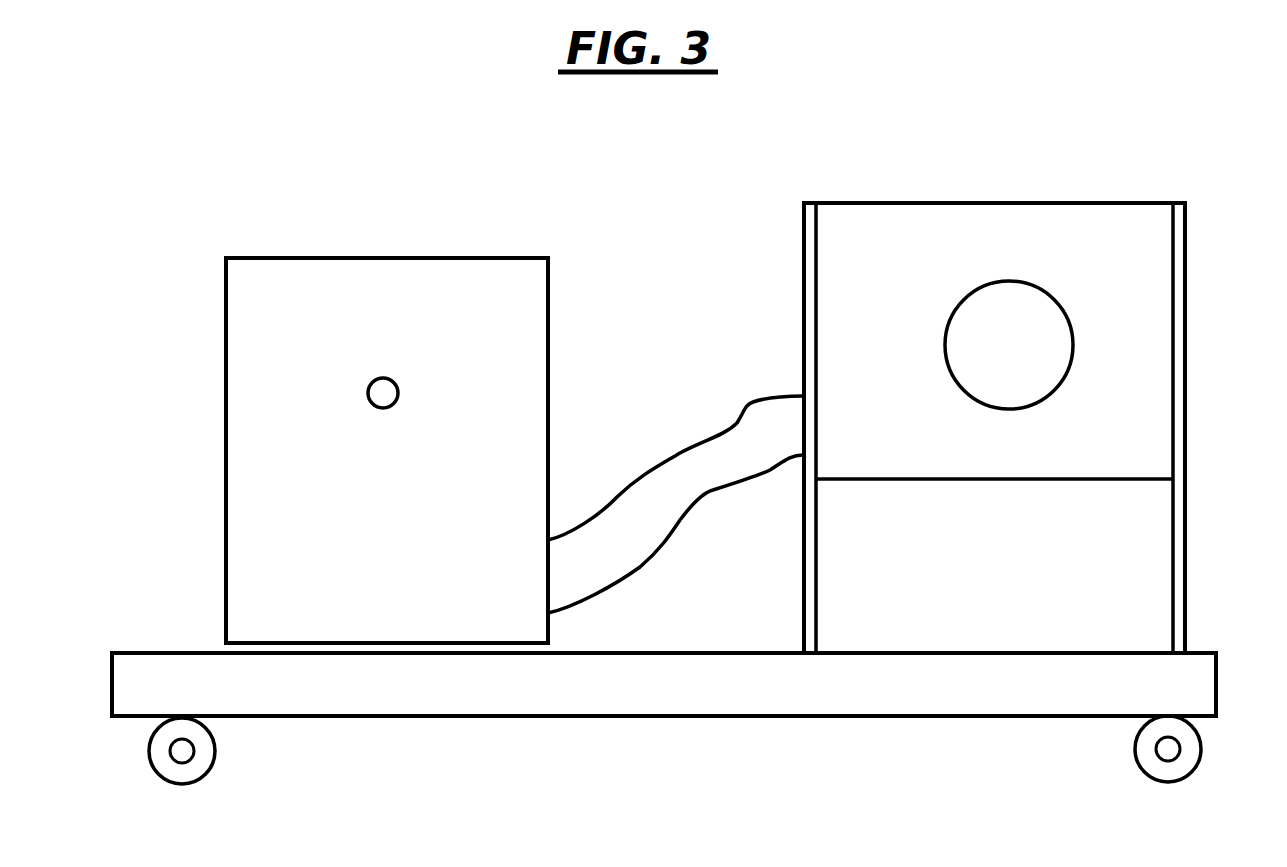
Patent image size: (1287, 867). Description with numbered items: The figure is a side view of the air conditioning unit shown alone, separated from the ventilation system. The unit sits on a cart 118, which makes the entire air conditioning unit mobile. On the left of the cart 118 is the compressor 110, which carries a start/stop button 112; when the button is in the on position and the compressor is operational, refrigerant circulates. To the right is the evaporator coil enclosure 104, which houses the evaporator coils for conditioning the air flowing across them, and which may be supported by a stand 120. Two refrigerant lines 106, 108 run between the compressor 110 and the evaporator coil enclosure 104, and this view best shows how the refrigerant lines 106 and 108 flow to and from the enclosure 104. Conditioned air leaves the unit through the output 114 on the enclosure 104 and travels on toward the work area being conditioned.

The evaporator coil enclosure 104 is at (868, 203).
The refrigerant line 106 is at (677, 458).
The refrigerant line 108 is at (684, 527).
The compressor 110 is at (428, 258).
The start/stop button 112 is at (368, 393).
The output 114 is at (1072, 323).
The cart 118 is at (177, 653).
The stand 120 is at (1185, 518).